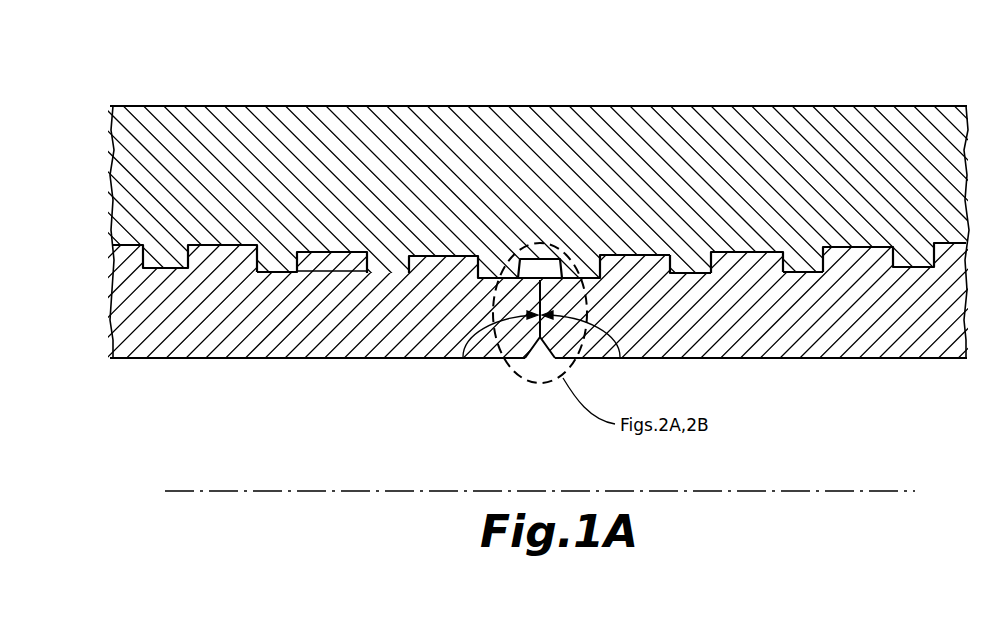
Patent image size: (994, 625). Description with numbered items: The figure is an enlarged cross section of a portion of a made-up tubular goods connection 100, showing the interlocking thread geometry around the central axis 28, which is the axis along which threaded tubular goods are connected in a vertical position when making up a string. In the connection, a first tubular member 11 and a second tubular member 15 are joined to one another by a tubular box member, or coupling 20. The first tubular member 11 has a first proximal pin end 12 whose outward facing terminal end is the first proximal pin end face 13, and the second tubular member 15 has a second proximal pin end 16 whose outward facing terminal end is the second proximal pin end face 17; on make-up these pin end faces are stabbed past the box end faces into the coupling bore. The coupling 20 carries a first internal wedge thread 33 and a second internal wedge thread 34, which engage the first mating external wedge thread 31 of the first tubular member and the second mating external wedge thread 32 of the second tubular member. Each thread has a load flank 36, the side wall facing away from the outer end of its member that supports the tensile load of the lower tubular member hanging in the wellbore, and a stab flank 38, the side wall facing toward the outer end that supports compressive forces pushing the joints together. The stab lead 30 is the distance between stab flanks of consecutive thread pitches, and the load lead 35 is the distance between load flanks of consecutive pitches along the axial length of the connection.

The tubular goods connection 100 is at (608, 100).
The tubular box member 20 is at (497, 200).
The first tubular member 11 is at (497, 302).
The second tubular member 15 is at (497, 302).
The first proximal pin end 12 is at (410, 342).
The first proximal pin end face 13 is at (463, 357).
The second proximal pin end face 17 is at (620, 357).
The second proximal pin end 16 is at (653, 340).
The central axis 28 is at (440, 490).
The stab lead 30 is at (480, 252).
The first mating external wedge thread 31 is at (331, 274).
The second mating external wedge thread 32 is at (747, 258).
The first internal wedge thread 33 is at (331, 250).
The second internal wedge thread 34 is at (743, 247).
The load lead 35 is at (407, 252).
The load flank 36 is at (673, 262).
The stab flank 38 is at (600, 262).